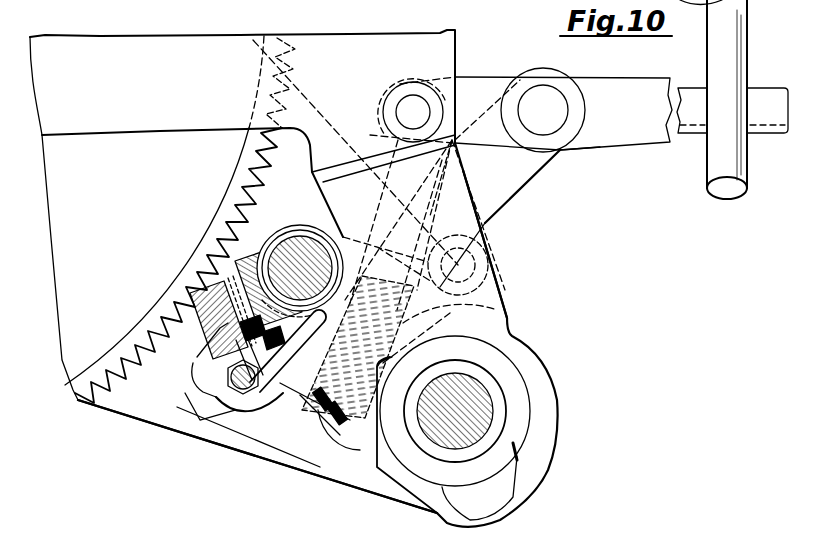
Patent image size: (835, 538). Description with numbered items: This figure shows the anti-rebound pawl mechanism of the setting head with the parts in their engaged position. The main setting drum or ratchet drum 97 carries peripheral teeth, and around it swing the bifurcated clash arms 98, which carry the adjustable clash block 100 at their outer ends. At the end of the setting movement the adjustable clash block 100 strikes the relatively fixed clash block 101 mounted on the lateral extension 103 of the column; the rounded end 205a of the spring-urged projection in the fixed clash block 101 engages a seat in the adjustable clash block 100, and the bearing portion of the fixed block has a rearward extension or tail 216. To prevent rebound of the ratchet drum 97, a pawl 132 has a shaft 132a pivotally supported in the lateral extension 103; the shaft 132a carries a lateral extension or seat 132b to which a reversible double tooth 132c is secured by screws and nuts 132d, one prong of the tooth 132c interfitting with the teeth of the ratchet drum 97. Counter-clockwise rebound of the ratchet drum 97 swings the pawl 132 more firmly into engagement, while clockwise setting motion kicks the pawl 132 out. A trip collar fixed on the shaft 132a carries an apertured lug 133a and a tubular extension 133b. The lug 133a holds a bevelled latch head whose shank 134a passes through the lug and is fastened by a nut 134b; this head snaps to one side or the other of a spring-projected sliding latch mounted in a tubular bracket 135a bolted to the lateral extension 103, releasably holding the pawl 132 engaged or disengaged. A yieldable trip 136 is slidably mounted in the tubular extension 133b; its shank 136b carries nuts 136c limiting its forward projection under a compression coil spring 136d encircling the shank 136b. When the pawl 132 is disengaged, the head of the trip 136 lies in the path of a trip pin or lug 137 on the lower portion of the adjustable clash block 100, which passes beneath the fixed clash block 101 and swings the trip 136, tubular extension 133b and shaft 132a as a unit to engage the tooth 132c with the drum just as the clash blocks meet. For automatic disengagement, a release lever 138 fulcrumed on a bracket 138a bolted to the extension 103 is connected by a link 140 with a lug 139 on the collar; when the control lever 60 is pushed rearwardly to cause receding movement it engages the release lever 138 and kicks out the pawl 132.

The bifurcated clash arm 98 is at (148, 46).
The ratchet drum 97 is at (103, 358).
The adjustable clash block 100 is at (449, 67).
The relatively fixed clash block 101 is at (490, 277).
The lateral extension of the column 103 is at (270, 447).
The control lever 60 is at (737, 50).
The pawl 132 is at (207, 317).
The shaft of the pawl 132a is at (297, 242).
The lateral extension or seat 132b is at (193, 348).
The reversible double tooth 132c is at (200, 288).
The screws and nuts 132d is at (235, 261).
The apertured lug 133a is at (220, 410).
The tubular extension 133b is at (350, 417).
The shank of the latch head 134a is at (188, 398).
The nut 134b is at (197, 418).
The tubular bracket 135a is at (257, 425).
The yieldable trip 136 is at (377, 247).
The shank of the trip 136b is at (323, 440).
The nuts on the trip shank 136c is at (337, 463).
The compression coil spring 136d is at (370, 343).
The trip pin or lug 137 is at (375, 240).
The release lever 138 is at (643, 137).
The bracket 138a is at (527, 176).
The lug on the collar 139 is at (505, 297).
The link 140 is at (500, 218).
The rounded end of the projection 205a is at (372, 140).
The rearward extension or tail 216 is at (498, 503).